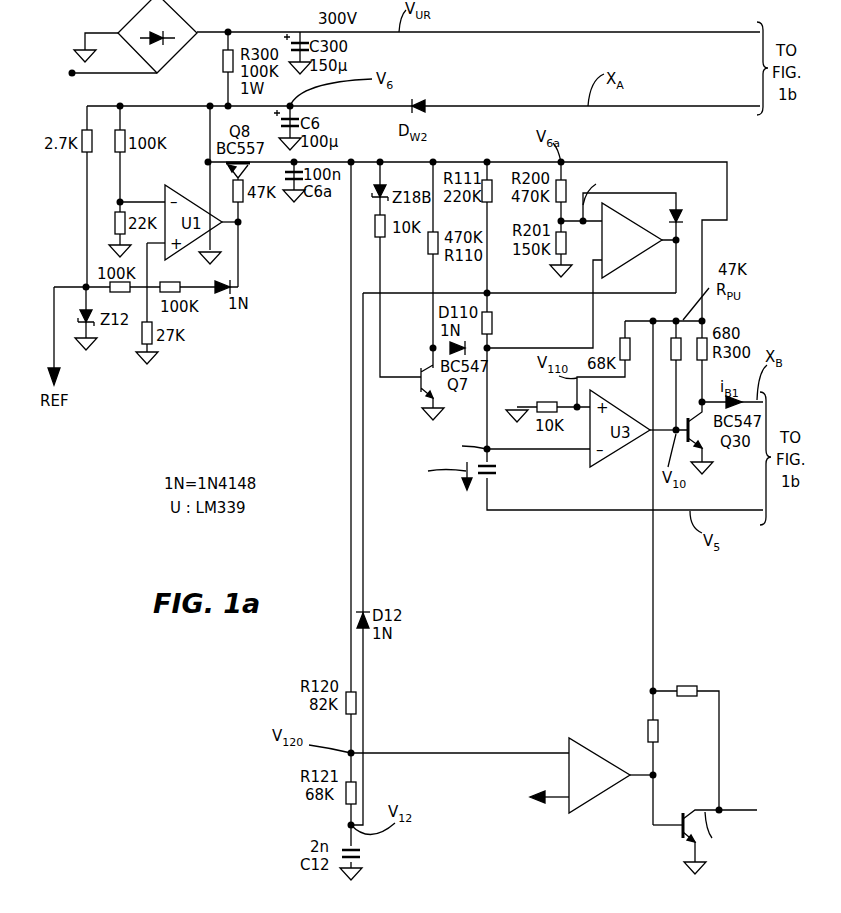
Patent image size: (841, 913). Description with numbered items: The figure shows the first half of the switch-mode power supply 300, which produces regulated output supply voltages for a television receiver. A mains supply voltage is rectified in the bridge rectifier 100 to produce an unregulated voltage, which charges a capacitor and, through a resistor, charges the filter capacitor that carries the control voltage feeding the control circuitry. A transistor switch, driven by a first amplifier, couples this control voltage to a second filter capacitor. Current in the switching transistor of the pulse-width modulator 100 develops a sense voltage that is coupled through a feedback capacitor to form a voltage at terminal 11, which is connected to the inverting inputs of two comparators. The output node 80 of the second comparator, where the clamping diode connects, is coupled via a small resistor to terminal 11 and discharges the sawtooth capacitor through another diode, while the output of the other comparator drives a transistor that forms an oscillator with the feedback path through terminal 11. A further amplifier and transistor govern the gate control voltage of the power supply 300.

The bridge rectifier 100 is at (170, 27).
The switch-mode power supply 300 is at (513, 863).
The comparator U2 output node 80 is at (702, 292).
The terminal 11 is at (489, 446).